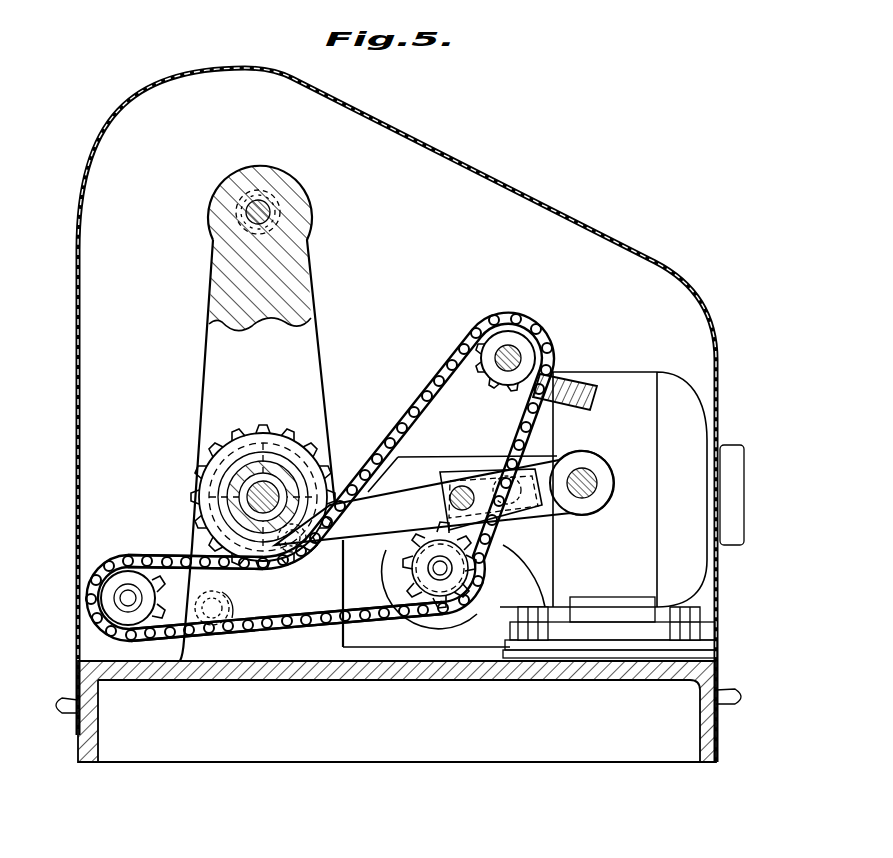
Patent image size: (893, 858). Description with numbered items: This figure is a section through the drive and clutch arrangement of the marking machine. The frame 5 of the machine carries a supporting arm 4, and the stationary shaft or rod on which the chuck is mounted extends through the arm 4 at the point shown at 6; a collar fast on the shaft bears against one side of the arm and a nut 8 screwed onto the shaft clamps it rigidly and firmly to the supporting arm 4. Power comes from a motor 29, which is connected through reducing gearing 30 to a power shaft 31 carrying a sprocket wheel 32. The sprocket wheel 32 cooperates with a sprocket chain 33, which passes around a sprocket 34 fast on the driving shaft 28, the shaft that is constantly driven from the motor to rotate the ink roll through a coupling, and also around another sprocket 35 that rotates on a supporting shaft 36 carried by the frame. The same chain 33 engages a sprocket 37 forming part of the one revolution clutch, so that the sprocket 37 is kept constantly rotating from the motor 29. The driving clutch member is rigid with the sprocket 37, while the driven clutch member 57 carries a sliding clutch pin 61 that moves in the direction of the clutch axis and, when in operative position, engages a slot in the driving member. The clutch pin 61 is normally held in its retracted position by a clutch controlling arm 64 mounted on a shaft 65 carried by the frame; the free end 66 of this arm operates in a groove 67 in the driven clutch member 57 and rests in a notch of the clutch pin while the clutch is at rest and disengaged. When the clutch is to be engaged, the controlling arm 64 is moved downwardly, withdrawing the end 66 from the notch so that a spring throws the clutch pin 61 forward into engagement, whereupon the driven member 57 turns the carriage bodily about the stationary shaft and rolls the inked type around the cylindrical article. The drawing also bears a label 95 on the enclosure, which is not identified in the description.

The supporting arm 4 is at (216, 350).
The frame 5 is at (78, 666).
The shaft extension through arm 6 is at (247, 212).
The nut 8 is at (276, 204).
The driving shaft 28 is at (516, 350).
The motor 29 is at (637, 372).
The reducing gearing 30 is at (430, 467).
The power shaft 31 is at (442, 572).
The sprocket wheel 32 is at (426, 593).
The sprocket chain 33 is at (271, 624).
The sprocket 34 is at (462, 358).
The sprocket 35 is at (142, 562).
The supporting shaft 36 is at (126, 600).
The sprocket 37 is at (192, 500).
The driven clutch member 57 is at (262, 452).
The clutch pin 61 is at (243, 528).
The clutch controlling arm 64 is at (383, 510).
The shaft 65 is at (592, 477).
The free end of clutch controlling arm 66 is at (300, 549).
The groove 67 is at (220, 478).
The housing 95 is at (447, 163).